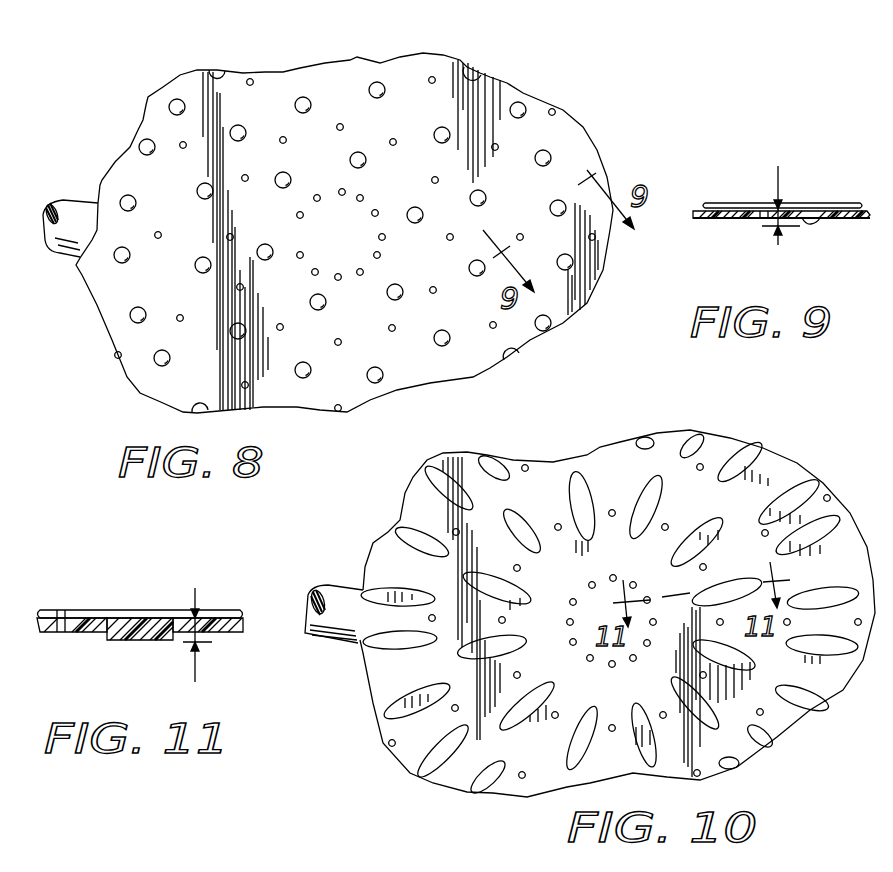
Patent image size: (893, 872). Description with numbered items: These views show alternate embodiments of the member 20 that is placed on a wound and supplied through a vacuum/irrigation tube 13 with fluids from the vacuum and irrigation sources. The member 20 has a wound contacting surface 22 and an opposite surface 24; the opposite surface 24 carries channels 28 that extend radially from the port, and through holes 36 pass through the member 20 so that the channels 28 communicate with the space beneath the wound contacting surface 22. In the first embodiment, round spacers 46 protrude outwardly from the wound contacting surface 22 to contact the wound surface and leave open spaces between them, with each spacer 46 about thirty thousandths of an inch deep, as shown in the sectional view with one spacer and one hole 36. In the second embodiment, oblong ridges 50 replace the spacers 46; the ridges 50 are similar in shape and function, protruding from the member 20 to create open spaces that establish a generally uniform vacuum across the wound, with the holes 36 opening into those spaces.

In FIG. 8, the vacuum/irrigation tube 13 is at (78, 215).
In FIG. 10, the vacuum/irrigation tube 13 is at (342, 597).
In FIG. 8, the member 20 is at (283, 67).
In FIG. 9, the member 20 is at (779, 203).
In FIG. 11, the member 20 is at (142, 621).
In FIG. 10, the member 20 is at (841, 488).
In FIG. 8, the wound contacting surface 22 is at (575, 135).
In FIG. 9, the wound contacting surface 22 is at (730, 217).
In FIG. 11, the wound contacting surface 22 is at (92, 633).
In FIG. 10, the wound contacting surface 22 is at (784, 466).
In FIG. 9, the opposite surface 24 is at (727, 204).
In FIG. 11, the opposite surface 24 is at (220, 609).
In FIG. 9, the channels 28 is at (843, 208).
In FIG. 8, the through holes 36 is at (434, 77).
In FIG. 9, the through holes 36 is at (763, 219).
In FIG. 11, the through holes 36 is at (62, 609).
In FIG. 10, the through holes 36 is at (612, 510).
In FIG. 8, the spacers 46 is at (522, 106).
In FIG. 9, the spacers 46 is at (813, 226).
In FIG. 11, the oblong ridges 50 is at (153, 641).
In FIG. 10, the oblong ridges 50 is at (742, 451).